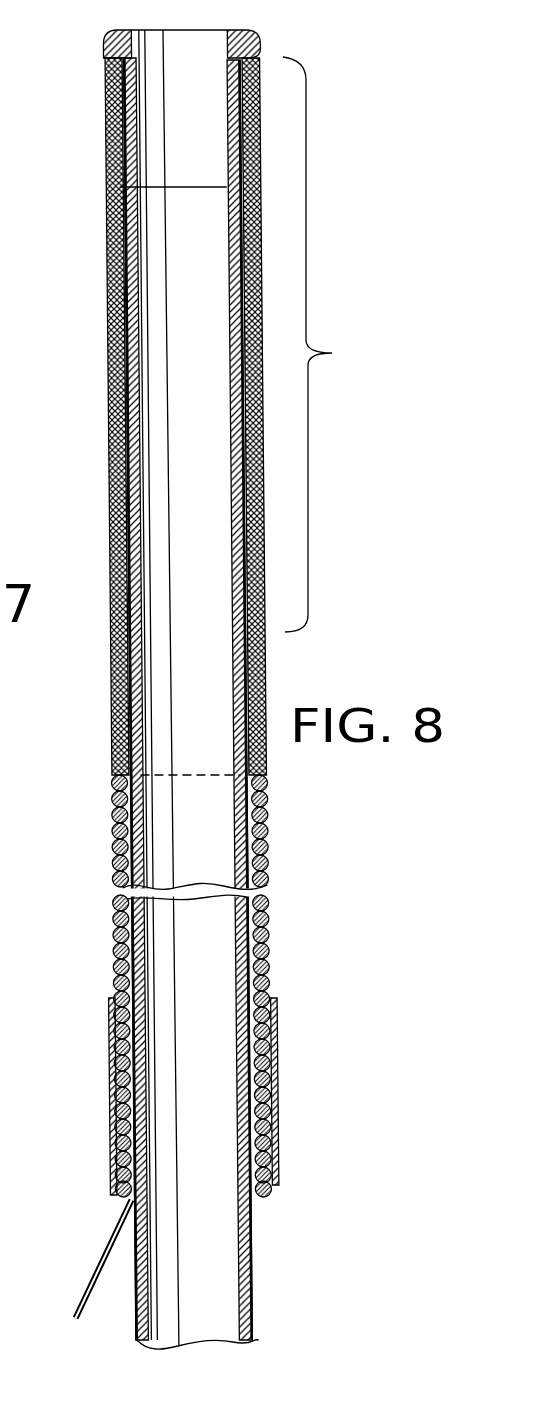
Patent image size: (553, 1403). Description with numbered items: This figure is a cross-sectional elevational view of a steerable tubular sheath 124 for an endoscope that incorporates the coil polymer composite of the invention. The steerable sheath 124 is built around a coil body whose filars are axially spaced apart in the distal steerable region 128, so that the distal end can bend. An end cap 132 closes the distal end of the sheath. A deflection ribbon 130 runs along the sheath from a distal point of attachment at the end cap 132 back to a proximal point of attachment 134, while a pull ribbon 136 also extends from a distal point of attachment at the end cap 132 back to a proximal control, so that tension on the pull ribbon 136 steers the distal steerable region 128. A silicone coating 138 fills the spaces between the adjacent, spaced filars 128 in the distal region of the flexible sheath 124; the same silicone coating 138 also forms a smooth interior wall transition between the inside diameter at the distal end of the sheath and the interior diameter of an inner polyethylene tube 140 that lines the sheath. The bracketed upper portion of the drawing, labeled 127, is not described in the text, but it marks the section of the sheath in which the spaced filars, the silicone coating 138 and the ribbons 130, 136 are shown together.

The steerable sheath 124 is at (204, 674).
The proximal shaft section 127 is at (345, 344).
The distal steerable region 128 is at (268, 992).
The deflection ribbon 130 is at (245, 316).
The end cap 132 is at (255, 40).
The proximal point of attachment 134 is at (245, 592).
The pull ribbon 136 is at (125, 353).
The silicone coating 138 is at (123, 188).
The inner polyethylene tube 140 is at (262, 818).